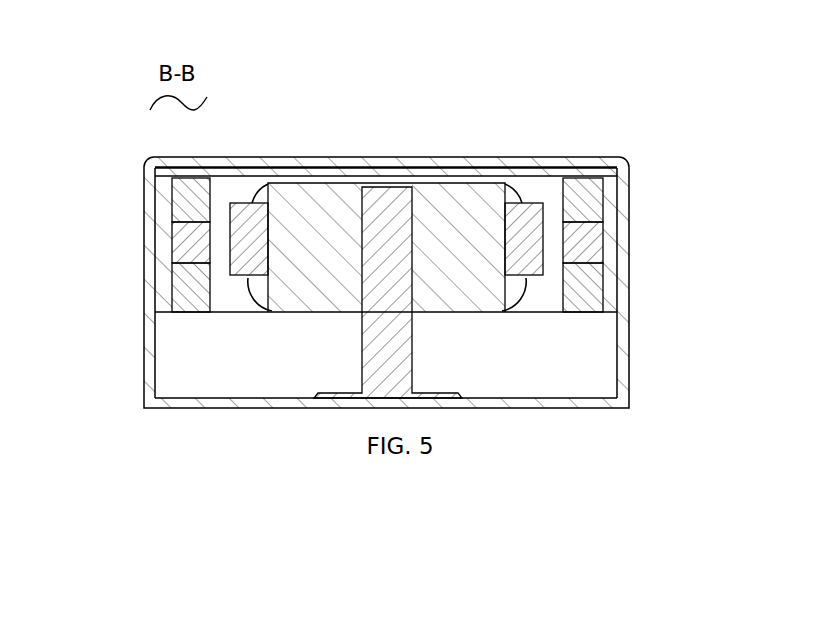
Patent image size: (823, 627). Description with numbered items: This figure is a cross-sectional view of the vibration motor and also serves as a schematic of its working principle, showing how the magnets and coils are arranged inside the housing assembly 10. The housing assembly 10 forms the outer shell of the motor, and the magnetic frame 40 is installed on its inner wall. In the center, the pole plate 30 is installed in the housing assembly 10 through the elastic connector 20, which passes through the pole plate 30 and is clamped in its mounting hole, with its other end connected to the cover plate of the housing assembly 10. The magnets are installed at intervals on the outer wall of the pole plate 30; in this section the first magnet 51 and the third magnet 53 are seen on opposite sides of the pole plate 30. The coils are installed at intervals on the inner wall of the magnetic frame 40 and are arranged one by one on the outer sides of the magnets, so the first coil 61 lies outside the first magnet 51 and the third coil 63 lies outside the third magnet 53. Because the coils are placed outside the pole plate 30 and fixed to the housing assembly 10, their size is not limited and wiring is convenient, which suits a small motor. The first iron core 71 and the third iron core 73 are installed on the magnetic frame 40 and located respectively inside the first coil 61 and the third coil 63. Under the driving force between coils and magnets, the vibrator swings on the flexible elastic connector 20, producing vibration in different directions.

The housing assembly 10 is at (622, 353).
The elastic connector 20 is at (388, 215).
The pole plate 30 is at (312, 215).
The magnetic frame 40 is at (157, 297).
The first magnet 51 is at (245, 215).
The third magnet 53 is at (525, 217).
The first coil 61 is at (190, 202).
The third coil 63 is at (585, 202).
The first iron core 71 is at (193, 250).
The third iron core 73 is at (582, 247).